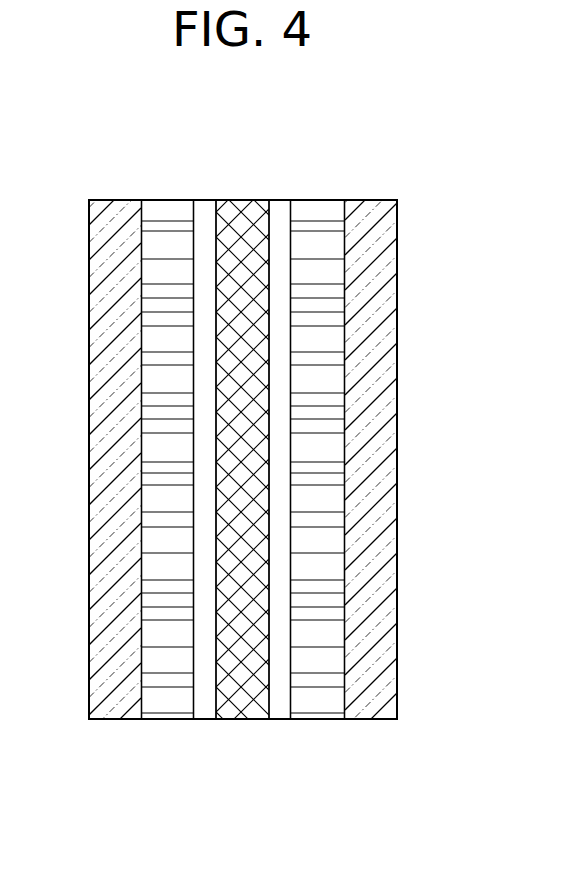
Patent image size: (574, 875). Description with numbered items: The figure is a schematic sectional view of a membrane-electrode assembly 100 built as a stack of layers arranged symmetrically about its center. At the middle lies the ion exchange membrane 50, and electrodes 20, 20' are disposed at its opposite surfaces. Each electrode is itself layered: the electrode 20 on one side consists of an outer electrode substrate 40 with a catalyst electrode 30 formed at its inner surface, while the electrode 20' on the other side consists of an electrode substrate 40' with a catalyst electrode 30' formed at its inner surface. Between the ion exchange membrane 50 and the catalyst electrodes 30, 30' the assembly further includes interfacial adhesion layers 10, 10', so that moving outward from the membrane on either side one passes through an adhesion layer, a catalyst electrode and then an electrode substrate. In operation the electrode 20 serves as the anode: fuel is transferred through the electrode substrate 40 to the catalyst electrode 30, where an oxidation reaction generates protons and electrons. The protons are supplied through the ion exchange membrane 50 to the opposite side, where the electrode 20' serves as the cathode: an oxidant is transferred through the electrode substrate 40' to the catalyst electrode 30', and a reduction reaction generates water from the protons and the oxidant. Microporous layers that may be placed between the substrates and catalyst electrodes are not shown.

The membrane-electrode assembly 100 is at (259, 96).
The electrode 20 is at (141, 430).
The electrode 20' is at (344, 428).
The electrode substrate 40 is at (115, 447).
The electrode substrate 40' is at (371, 445).
The catalyst electrode 30 is at (168, 432).
The catalyst electrode 30' is at (318, 432).
The interfacial adhesion layer 10 is at (206, 432).
The interfacial adhesion layer 10' is at (283, 432).
The ion exchange membrane 50 is at (243, 213).